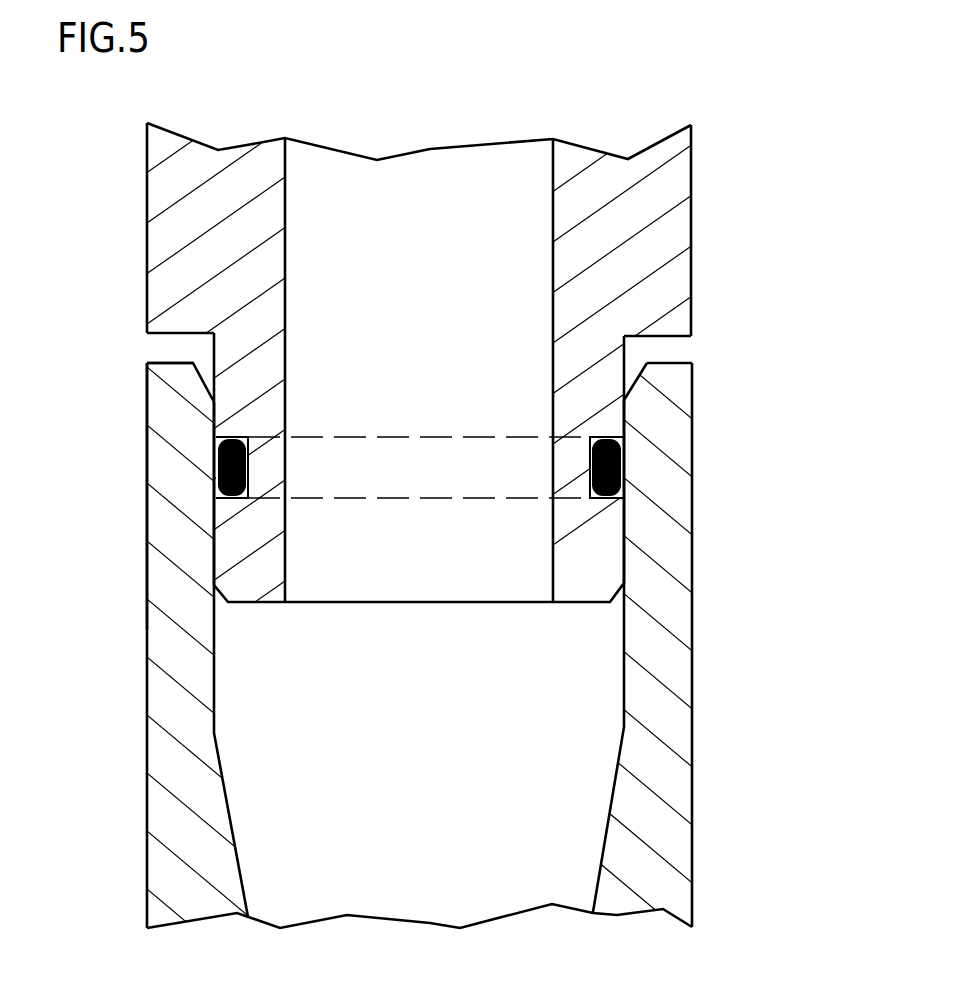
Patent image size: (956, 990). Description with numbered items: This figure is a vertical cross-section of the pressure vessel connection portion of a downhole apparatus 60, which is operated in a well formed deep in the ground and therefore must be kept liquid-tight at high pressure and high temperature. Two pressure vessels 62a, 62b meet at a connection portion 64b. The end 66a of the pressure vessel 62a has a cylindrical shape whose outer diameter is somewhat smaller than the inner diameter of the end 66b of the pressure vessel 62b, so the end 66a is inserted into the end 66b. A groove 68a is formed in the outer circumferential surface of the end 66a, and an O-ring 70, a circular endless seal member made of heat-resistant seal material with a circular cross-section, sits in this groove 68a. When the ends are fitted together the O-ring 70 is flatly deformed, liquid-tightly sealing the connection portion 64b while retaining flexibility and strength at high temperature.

The downhole apparatus 60 is at (424, 495).
The pressure vessel 62a is at (652, 235).
The pressure vessel 62b is at (663, 732).
The connection portion 64b is at (673, 353).
The end of the pressure vessel 66a is at (242, 573).
The end of the pressure vessel 66b is at (167, 413).
The groove 68a is at (238, 437).
The O-ring 70 is at (620, 459).